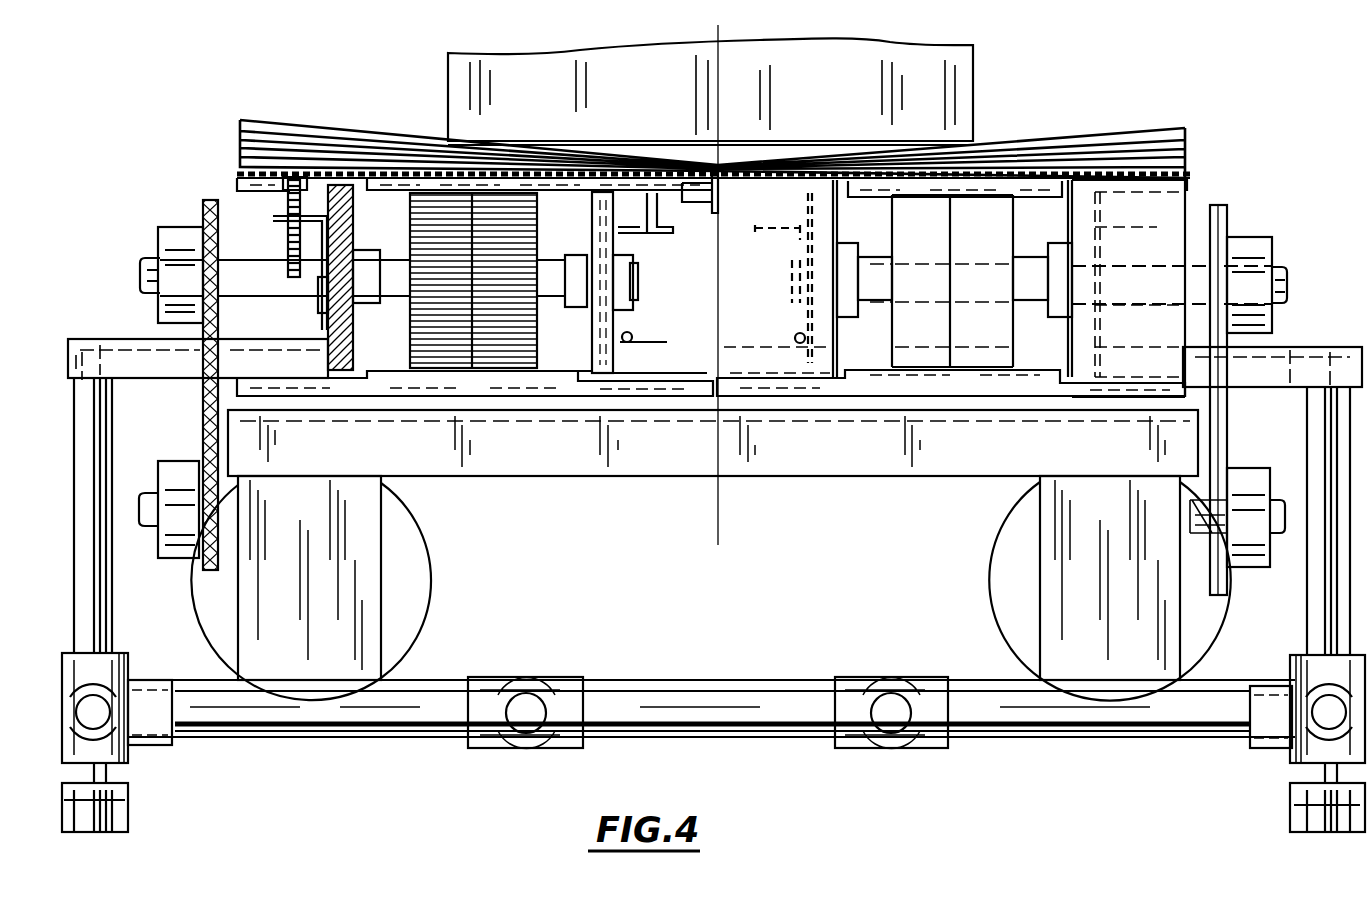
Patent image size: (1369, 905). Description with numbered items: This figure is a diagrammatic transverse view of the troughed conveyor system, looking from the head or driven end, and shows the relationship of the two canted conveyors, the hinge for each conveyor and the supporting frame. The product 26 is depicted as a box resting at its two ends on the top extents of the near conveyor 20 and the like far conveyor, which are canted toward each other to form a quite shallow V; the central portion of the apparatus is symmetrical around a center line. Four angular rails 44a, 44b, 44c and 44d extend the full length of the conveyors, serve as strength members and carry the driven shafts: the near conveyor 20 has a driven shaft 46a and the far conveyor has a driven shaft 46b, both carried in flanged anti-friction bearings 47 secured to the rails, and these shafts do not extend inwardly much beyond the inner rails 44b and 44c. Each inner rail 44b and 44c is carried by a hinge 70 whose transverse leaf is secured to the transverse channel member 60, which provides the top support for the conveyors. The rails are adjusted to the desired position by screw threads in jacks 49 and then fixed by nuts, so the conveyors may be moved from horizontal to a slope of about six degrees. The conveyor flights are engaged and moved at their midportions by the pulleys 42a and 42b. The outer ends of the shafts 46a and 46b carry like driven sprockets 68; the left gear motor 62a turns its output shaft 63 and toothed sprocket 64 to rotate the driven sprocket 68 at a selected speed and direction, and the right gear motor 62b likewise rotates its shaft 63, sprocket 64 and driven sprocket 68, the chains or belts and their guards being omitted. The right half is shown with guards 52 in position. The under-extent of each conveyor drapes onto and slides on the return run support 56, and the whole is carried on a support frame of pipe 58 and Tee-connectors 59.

The near conveyor 20 is at (352, 132).
The product 26 is at (642, 101).
The jacks 49 is at (288, 198).
The driven sprocket 68 is at (182, 225).
The angular rail 44a is at (310, 235).
The driven shaft 46a is at (140, 268).
The pulley 42a is at (410, 240).
The inner angular rail 44b is at (703, 257).
The inner angular rail 44c is at (795, 235).
The guards 52 is at (827, 228).
The pulley 42b is at (1006, 228).
The angular rail 44d is at (1150, 227).
The driven shaft 46b is at (1350, 264).
The transverse channel 60 is at (100, 339).
The flanged anti-friction bearing 47 is at (340, 283).
The hinge 70 is at (638, 330).
The output shaft 63 is at (146, 492).
The toothed sprocket 64 is at (172, 558).
The left gear motor 62a is at (492, 604).
The right gear motor 62b is at (1000, 565).
The return run support 56 is at (785, 465).
The Tee-connector 59 is at (546, 690).
The pipe 58 is at (690, 697).